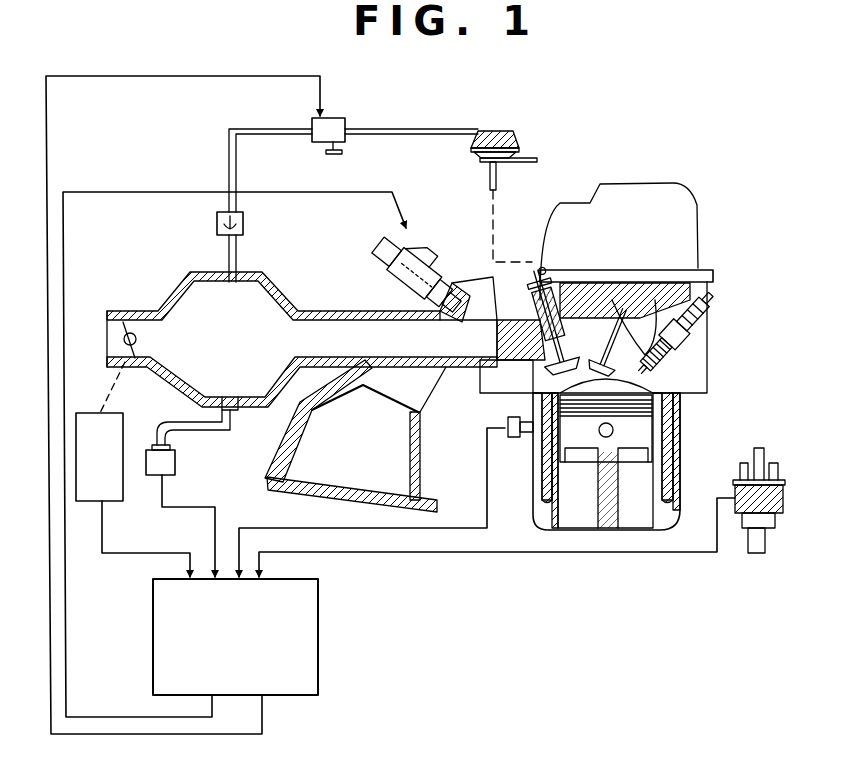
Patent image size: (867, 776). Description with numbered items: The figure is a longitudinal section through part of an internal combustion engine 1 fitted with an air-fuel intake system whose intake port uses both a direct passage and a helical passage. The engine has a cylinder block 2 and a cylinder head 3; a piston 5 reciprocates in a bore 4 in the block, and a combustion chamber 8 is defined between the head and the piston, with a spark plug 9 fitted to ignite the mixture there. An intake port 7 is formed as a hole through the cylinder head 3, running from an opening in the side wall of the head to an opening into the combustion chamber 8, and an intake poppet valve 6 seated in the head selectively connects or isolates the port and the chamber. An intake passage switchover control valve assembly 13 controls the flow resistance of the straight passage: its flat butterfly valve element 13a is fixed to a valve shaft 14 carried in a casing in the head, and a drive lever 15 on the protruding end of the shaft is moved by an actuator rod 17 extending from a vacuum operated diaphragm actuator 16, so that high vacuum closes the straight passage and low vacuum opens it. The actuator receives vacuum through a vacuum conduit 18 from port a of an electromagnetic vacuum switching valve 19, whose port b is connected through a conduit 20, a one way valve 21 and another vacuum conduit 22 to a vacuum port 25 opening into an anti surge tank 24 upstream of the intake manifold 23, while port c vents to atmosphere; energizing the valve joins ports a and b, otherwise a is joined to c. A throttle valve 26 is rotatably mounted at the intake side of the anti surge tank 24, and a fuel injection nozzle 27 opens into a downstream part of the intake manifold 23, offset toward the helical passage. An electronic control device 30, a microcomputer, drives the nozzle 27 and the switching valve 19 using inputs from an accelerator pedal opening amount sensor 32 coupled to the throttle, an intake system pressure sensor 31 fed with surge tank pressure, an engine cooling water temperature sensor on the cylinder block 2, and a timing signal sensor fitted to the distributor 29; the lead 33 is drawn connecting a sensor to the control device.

The internal combustion engine 1 is at (692, 413).
The cylinder block 2 is at (683, 458).
The cylinder head 3 is at (683, 390).
The bore 4 is at (563, 438).
The piston 5 is at (587, 443).
The intake poppet valve 6 is at (628, 322).
The intake port 7 is at (516, 415).
The combustion chamber 8 is at (605, 387).
The spark plug 9 is at (690, 340).
The intake passage switchover control valve assembly 13 is at (528, 270).
The valve element 13a is at (594, 310).
The valve shaft 14 is at (566, 290).
The drive lever 15 is at (548, 262).
The vacuum operated diaphragm actuator 16 is at (497, 128).
The actuator rod 17 is at (497, 178).
The vacuum conduit 18 is at (402, 128).
The electromagnetic vacuum switching valve 19 is at (322, 142).
The conduit 20 is at (237, 165).
The one way valve 21 is at (243, 222).
The vacuum conduit 22 is at (237, 255).
The intake manifold 23 is at (373, 311).
The anti surge tank 24 is at (283, 293).
The vacuum port 25 is at (243, 283).
The throttle valve 26 is at (130, 328).
The fuel injection nozzle 27 is at (430, 270).
The distributor 29 is at (735, 500).
The electronic control device 30 is at (320, 640).
The intake system pressure sensor 31 is at (176, 460).
The accelerator pedal opening amount sensor 32 is at (123, 490).
The sensor lead 33 is at (505, 427).